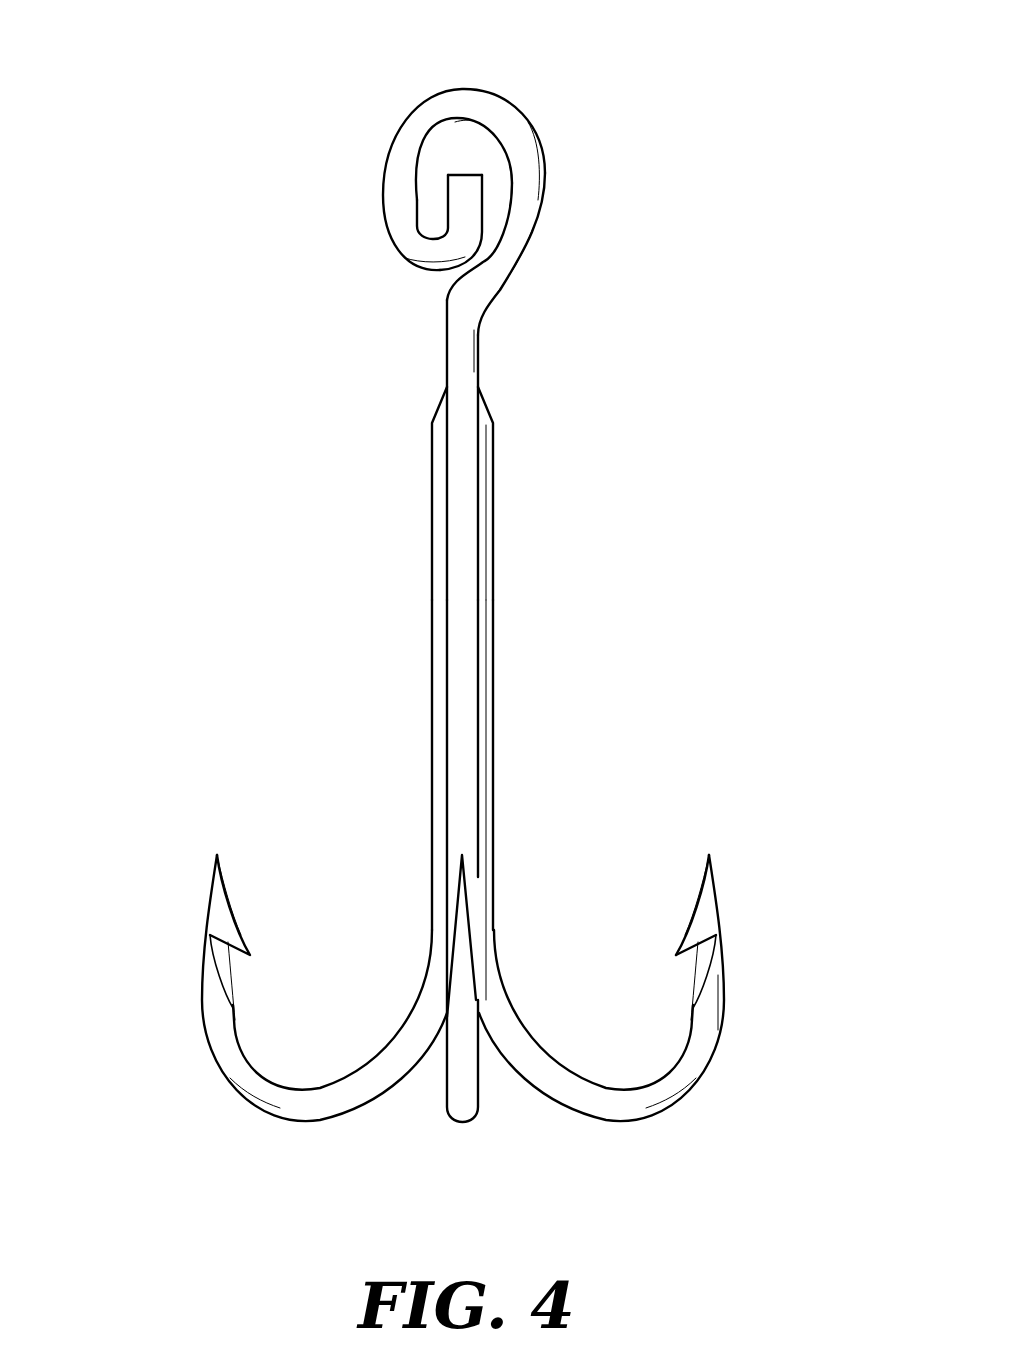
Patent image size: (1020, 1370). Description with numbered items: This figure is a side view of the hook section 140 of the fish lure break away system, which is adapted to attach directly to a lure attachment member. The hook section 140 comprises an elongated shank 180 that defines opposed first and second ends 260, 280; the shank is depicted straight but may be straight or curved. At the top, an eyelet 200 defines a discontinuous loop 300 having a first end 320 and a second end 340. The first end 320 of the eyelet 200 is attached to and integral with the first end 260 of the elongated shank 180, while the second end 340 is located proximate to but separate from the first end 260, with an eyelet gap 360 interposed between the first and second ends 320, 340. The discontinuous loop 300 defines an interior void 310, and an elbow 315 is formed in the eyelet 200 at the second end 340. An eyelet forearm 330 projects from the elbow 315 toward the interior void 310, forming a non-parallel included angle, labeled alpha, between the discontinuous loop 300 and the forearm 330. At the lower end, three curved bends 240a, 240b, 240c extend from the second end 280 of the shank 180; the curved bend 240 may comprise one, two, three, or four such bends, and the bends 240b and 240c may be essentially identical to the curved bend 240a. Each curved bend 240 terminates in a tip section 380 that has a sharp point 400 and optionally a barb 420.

The hook section 140 is at (147, 58).
The elongated shank 180 is at (530, 711).
The eyelet 200 is at (587, 60).
The curved bend 240 is at (516, 994).
The curved bend 240a is at (669, 988).
The curved bend 240b is at (442, 1142).
The curved bend 240c is at (275, 1142).
The first end of the elongated shank 260 is at (468, 322).
The second end of the elongated shank 280 is at (492, 892).
The discontinuous loop 300 is at (424, 98).
The interior void 310 is at (473, 137).
The elbow 315 is at (413, 260).
The first end of the eyelet 320 is at (487, 283).
The eyelet forearm 330 is at (450, 178).
The second end of the eyelet 340 is at (350, 226).
The eyelet gap 360 is at (428, 293).
The tip section 380 is at (705, 891).
The sharp point 400 is at (708, 857).
The barb 420 is at (677, 957).